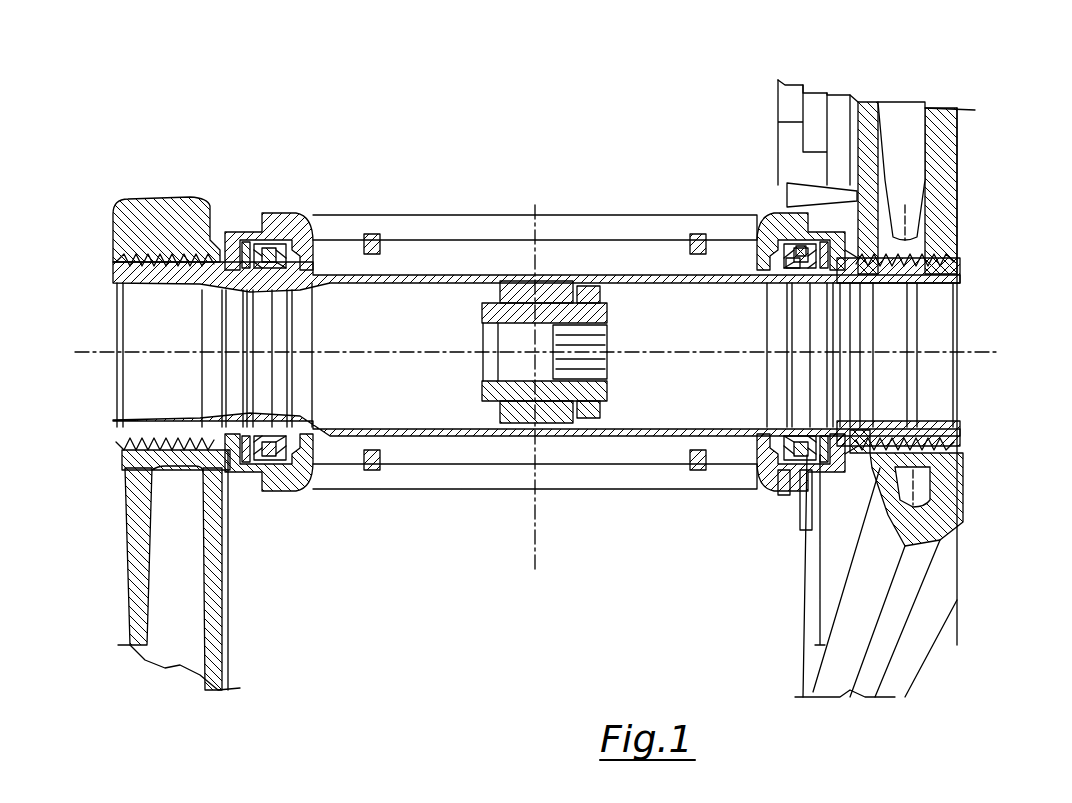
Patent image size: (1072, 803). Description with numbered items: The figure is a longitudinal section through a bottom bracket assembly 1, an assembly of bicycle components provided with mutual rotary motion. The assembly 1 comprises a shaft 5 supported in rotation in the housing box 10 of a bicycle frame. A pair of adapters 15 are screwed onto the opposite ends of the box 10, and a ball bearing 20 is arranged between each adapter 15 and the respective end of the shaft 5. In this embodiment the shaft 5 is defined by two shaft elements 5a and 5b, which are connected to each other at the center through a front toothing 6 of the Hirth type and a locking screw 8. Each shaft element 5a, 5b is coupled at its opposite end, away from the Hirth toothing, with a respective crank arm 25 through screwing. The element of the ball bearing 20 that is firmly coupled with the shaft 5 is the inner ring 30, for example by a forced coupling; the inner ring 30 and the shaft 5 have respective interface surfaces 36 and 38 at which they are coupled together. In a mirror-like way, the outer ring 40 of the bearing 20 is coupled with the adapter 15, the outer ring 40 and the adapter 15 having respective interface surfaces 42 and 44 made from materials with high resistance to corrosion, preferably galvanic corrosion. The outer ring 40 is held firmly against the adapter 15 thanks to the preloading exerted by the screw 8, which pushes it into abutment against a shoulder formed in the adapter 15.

The bottom bracket assembly 1 is at (183, 84).
The shaft 5 is at (418, 283).
The shaft element 5a is at (412, 426).
The shaft element 5b is at (675, 426).
The front toothing 6 is at (540, 302).
The locking screw 8 is at (538, 398).
The housing box 10 is at (437, 223).
The adapter 15 is at (302, 212).
The ball bearing 20 is at (300, 292).
The crank arm 25 is at (945, 137).
The inner ring 30 is at (845, 284).
The interface surface 36 is at (790, 295).
The interface surface 38 is at (792, 278).
The outer ring 40 is at (782, 497).
The interface surface 42 is at (905, 428).
The interface surface 44 is at (807, 533).